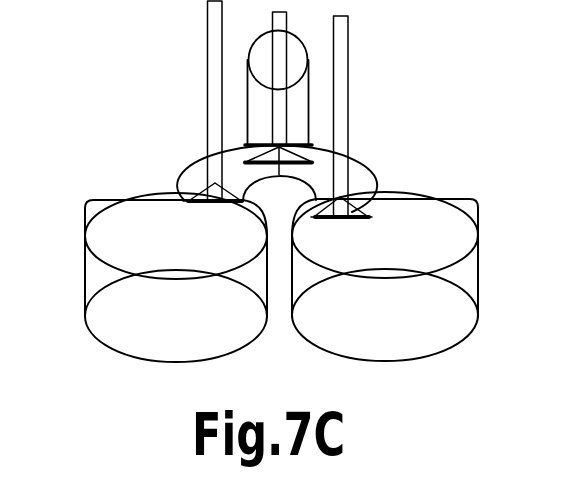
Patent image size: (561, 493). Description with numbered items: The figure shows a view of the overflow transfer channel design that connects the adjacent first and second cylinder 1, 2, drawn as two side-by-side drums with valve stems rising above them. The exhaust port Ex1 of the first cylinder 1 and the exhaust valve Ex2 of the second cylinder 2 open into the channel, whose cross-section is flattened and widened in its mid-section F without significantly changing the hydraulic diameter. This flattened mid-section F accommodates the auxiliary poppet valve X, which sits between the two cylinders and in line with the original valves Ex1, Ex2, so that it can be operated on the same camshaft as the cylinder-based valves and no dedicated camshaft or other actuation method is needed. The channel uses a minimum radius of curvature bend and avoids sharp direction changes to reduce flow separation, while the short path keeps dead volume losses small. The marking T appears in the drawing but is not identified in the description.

The tube T is at (207, 131).
The flattened mid-section of the transfer channel F is at (336, 127).
The auxiliary poppet valve X is at (350, 148).
The exhaust valve Ex2 is at (200, 187).
The delivering exhaust port Ex1 is at (365, 206).
The first cylinder 1 is at (103, 308).
The second cylinder 2 is at (442, 315).